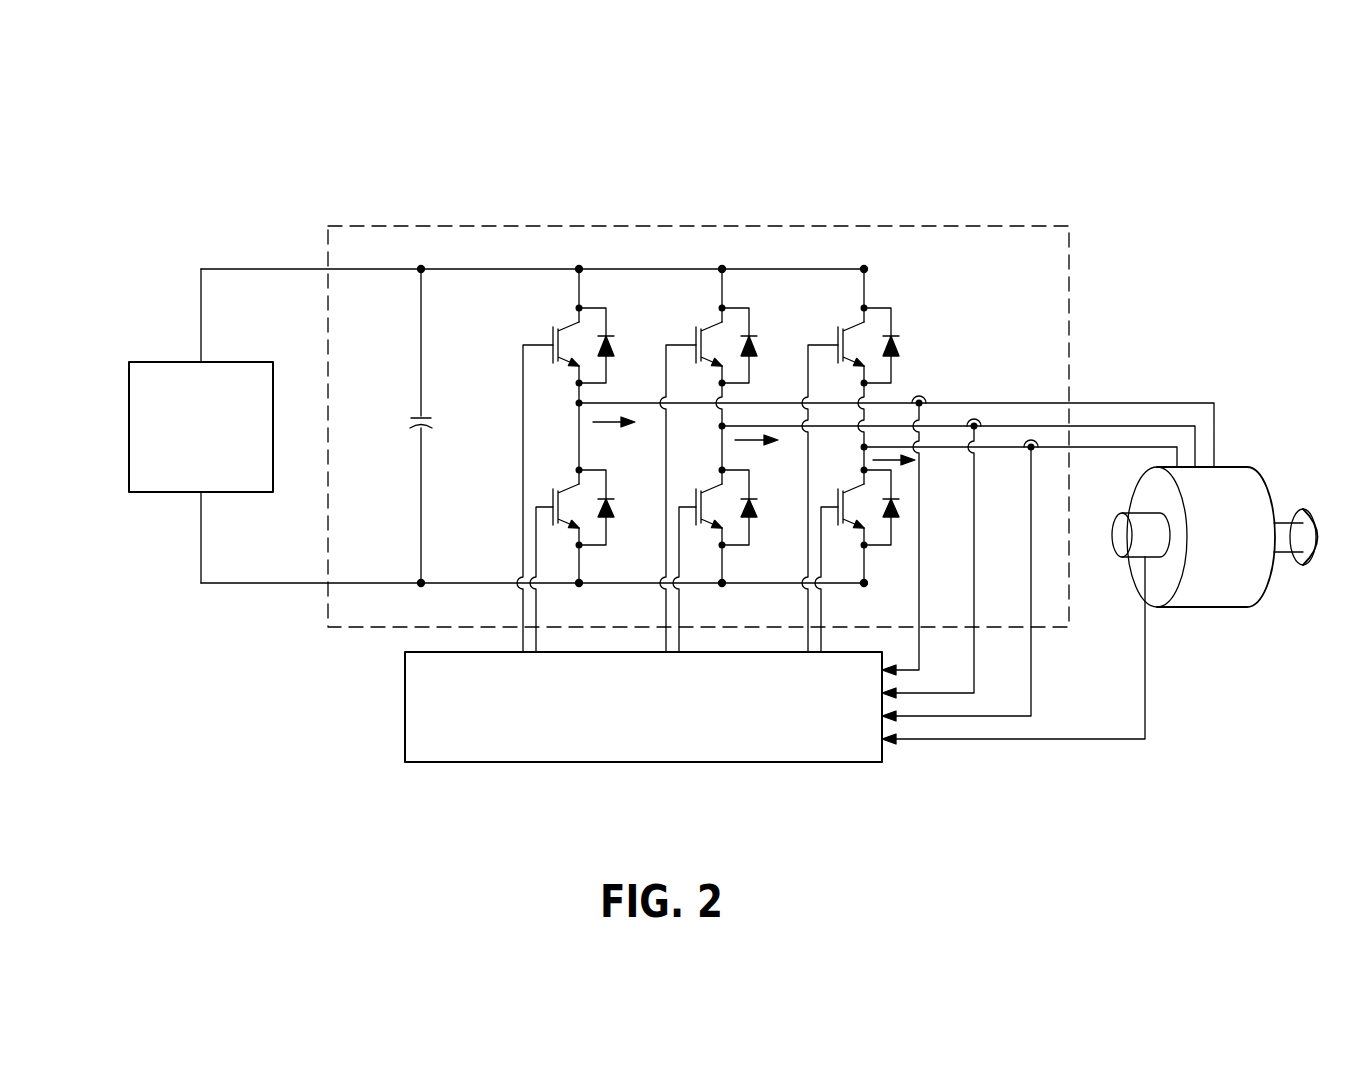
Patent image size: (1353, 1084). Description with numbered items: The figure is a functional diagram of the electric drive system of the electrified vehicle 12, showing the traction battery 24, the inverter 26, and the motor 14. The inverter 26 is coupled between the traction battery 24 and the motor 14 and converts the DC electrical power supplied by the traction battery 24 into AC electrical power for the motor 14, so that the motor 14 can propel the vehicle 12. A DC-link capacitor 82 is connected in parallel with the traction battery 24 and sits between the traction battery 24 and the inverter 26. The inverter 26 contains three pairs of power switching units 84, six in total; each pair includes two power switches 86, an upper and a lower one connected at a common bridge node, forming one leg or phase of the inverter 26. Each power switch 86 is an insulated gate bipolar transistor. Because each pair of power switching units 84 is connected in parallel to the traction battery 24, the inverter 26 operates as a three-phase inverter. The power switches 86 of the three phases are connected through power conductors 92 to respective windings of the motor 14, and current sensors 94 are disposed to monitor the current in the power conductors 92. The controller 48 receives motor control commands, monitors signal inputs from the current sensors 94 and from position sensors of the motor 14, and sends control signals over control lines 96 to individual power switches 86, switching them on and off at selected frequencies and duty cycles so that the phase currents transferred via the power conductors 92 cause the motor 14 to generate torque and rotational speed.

The electrified vehicle 12 is at (835, 138).
The motor 14 is at (1235, 467).
The traction battery 24 is at (129, 423).
The inverter 26 is at (738, 226).
The controller 48 is at (661, 762).
The DC-link capacitor 82 is at (427, 418).
The power switching units 84 is at (590, 330).
The power switches 86 is at (552, 340).
The power conductors 92 is at (1193, 403).
The current sensors 94 is at (1031, 440).
The control lines 96 is at (523, 617).